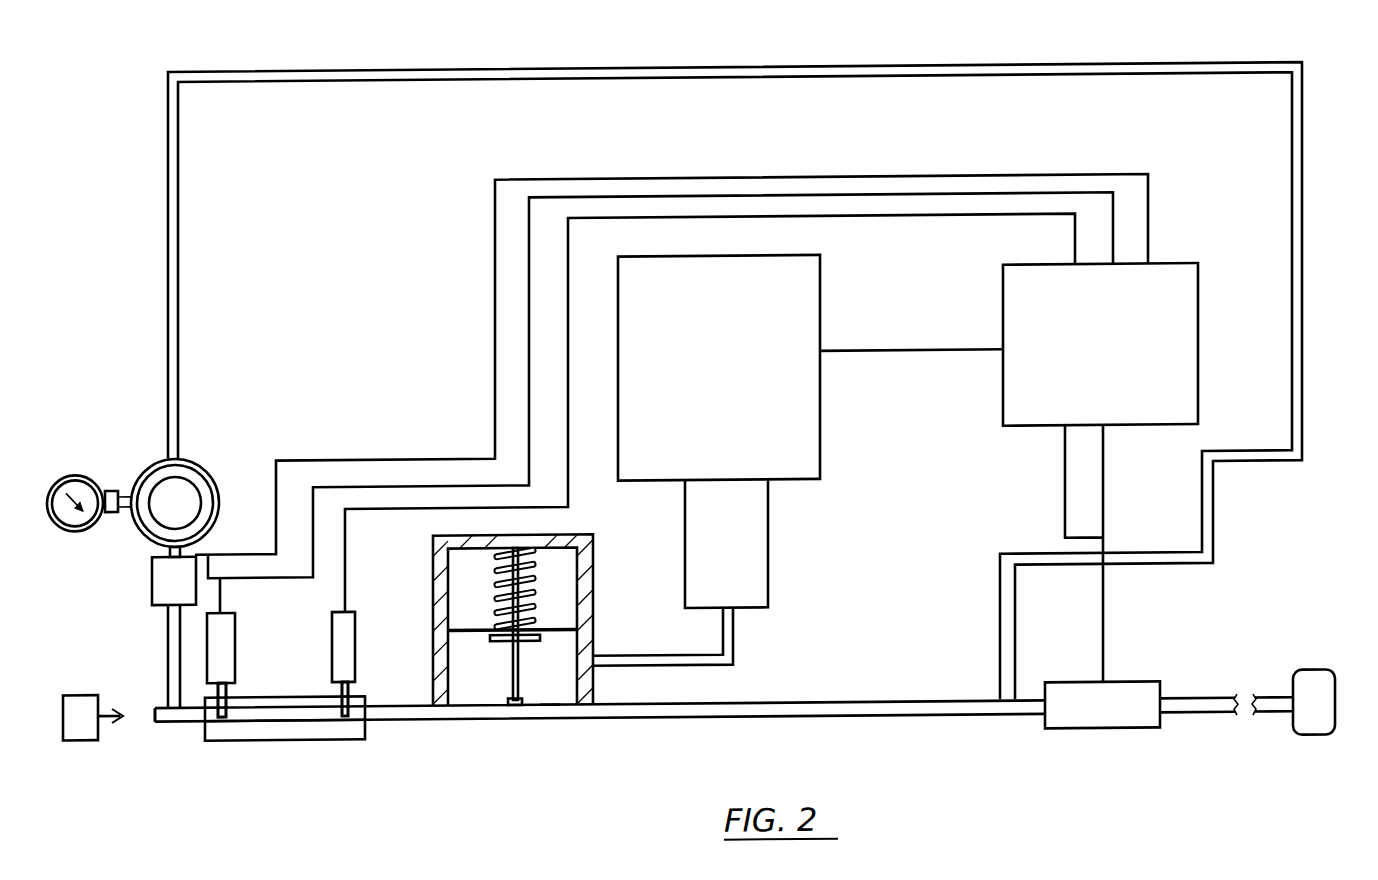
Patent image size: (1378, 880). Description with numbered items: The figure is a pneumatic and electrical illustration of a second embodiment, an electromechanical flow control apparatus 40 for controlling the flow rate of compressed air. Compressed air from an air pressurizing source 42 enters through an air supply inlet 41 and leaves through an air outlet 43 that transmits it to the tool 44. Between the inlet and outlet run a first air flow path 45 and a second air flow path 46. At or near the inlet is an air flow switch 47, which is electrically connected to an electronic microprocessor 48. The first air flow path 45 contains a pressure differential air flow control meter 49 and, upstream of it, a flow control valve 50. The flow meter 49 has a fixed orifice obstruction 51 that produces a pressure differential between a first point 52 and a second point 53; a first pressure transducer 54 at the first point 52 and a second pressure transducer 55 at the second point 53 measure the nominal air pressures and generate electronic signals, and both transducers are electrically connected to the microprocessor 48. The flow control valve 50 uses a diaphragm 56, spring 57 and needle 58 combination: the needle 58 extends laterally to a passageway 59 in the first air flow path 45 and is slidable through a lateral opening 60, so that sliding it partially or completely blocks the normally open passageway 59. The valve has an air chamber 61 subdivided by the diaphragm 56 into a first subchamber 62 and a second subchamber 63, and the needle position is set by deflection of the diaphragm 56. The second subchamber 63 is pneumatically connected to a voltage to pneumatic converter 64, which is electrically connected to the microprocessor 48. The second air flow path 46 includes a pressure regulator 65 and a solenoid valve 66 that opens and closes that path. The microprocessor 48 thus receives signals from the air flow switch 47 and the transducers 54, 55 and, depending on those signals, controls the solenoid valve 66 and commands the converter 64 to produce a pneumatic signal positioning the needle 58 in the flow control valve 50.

The electromechanical flow control apparatus 40 is at (150, 104).
The air supply inlet 41 is at (1240, 724).
The air pressurizing source 42 is at (1320, 681).
The air outlet 43 is at (157, 718).
The tool 44 is at (82, 696).
The first air flow path 45 is at (880, 724).
The second air flow path 46 is at (450, 74).
The air flow switch 47 is at (1104, 738).
The electronic microprocessor 48 is at (1199, 356).
The pressure differential air flow control meter 49 is at (298, 745).
The flow control valve 50 is at (503, 602).
The fixed orifice obstruction 51 is at (276, 745).
The first point 52 is at (348, 745).
The second point 53 is at (222, 738).
The first pressure transducer 54 is at (332, 669).
The second pressure transducer 55 is at (236, 636).
The diaphragm 56 is at (470, 633).
The spring 57 is at (594, 578).
The needle 58 is at (512, 660).
The passageway 59 is at (550, 718).
The lateral opening 60 is at (514, 704).
The air chamber 61 is at (548, 565).
The first subchamber 62 is at (466, 583).
The second subchamber 63 is at (587, 686).
The voltage to pneumatic converter 64 is at (821, 425).
The pressure regulator 65 is at (76, 478).
The solenoid valve 66 is at (152, 570).